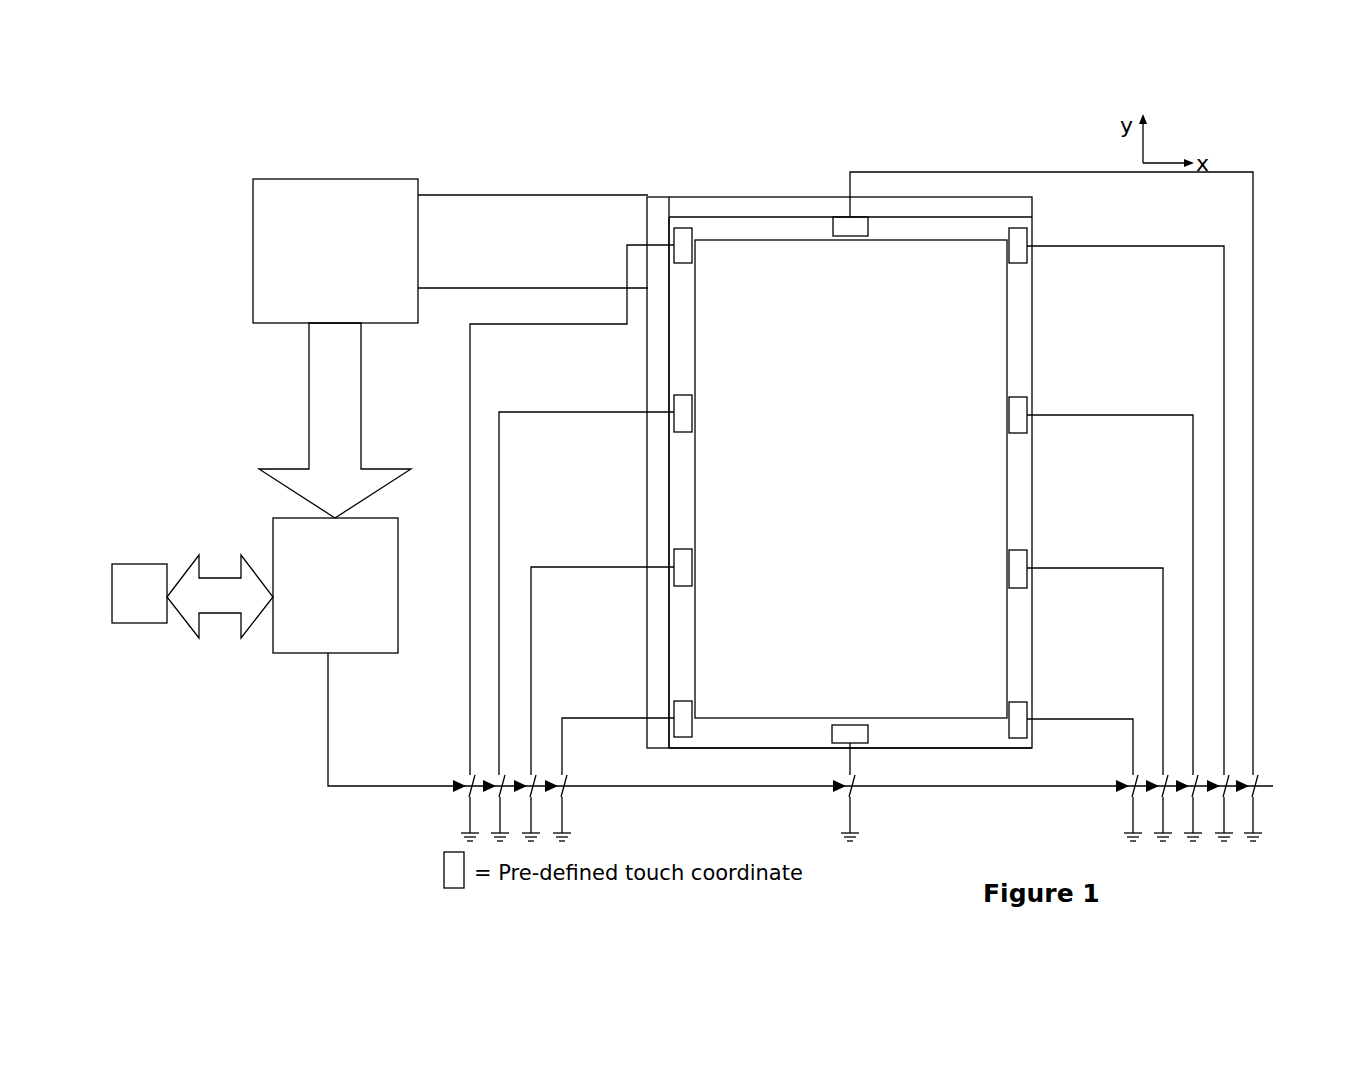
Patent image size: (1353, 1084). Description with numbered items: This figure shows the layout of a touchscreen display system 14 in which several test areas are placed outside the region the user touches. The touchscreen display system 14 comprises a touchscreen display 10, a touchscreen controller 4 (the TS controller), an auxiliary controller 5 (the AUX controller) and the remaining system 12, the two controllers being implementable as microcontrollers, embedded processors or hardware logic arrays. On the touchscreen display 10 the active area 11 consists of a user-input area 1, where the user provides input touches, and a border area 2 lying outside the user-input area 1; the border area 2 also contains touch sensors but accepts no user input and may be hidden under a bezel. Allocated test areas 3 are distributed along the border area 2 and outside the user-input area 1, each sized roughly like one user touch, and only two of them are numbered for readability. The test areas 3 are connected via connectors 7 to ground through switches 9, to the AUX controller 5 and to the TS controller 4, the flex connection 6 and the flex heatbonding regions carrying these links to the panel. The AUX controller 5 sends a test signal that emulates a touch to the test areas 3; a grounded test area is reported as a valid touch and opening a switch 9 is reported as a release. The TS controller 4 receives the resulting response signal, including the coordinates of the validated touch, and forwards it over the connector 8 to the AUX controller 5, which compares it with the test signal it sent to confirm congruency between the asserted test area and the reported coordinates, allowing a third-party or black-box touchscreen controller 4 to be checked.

The user-input area 1 is at (712, 263).
The border area 2 is at (775, 232).
The test areas 3 is at (1023, 257).
The touchscreen controller 4 is at (326, 179).
The auxiliary controller 5 is at (263, 512).
The flex connection 6 is at (565, 193).
The connectors 7 is at (1257, 278).
The connector 8 is at (307, 397).
The switches 9 is at (852, 783).
The touchscreen display 10 is at (768, 147).
The active area 11 is at (787, 205).
The remaining system 12 is at (152, 564).
The touchscreen display system 14 is at (471, 148).